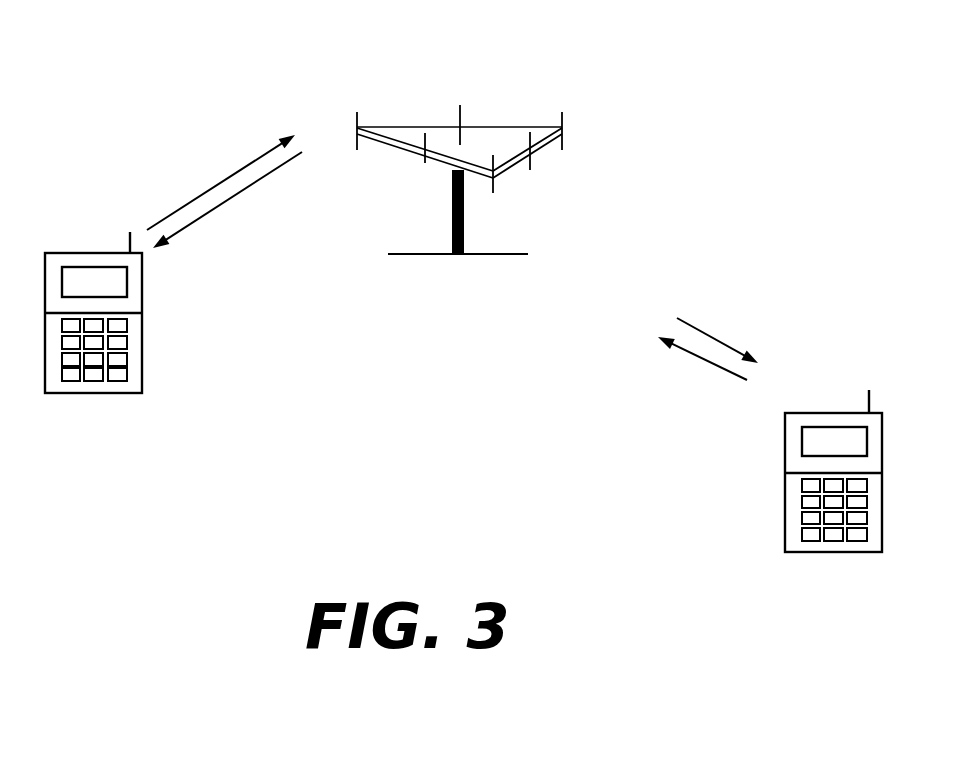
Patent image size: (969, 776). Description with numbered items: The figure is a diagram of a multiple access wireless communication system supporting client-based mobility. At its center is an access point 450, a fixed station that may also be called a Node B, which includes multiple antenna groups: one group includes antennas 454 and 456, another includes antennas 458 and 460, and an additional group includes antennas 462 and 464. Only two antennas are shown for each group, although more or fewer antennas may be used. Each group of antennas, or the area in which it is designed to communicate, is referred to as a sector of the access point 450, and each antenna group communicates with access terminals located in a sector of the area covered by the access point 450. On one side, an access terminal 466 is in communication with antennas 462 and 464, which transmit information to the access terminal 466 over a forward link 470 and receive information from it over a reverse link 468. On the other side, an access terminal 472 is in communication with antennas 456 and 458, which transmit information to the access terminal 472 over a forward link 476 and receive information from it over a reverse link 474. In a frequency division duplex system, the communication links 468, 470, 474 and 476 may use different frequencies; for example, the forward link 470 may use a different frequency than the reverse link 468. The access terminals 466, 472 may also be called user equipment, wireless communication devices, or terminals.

The access point 450 is at (440, 256).
The antenna 454 is at (495, 187).
The antenna 456 is at (542, 162).
The antenna 458 is at (568, 145).
The antenna 460 is at (460, 107).
The antenna 462 is at (357, 127).
The antenna 464 is at (425, 143).
The access terminal 466 is at (112, 248).
The reverse link 468 is at (218, 183).
The forward link 470 is at (237, 197).
The access terminal 472 is at (813, 412).
The reverse link 474 is at (690, 355).
The forward link 476 is at (720, 342).